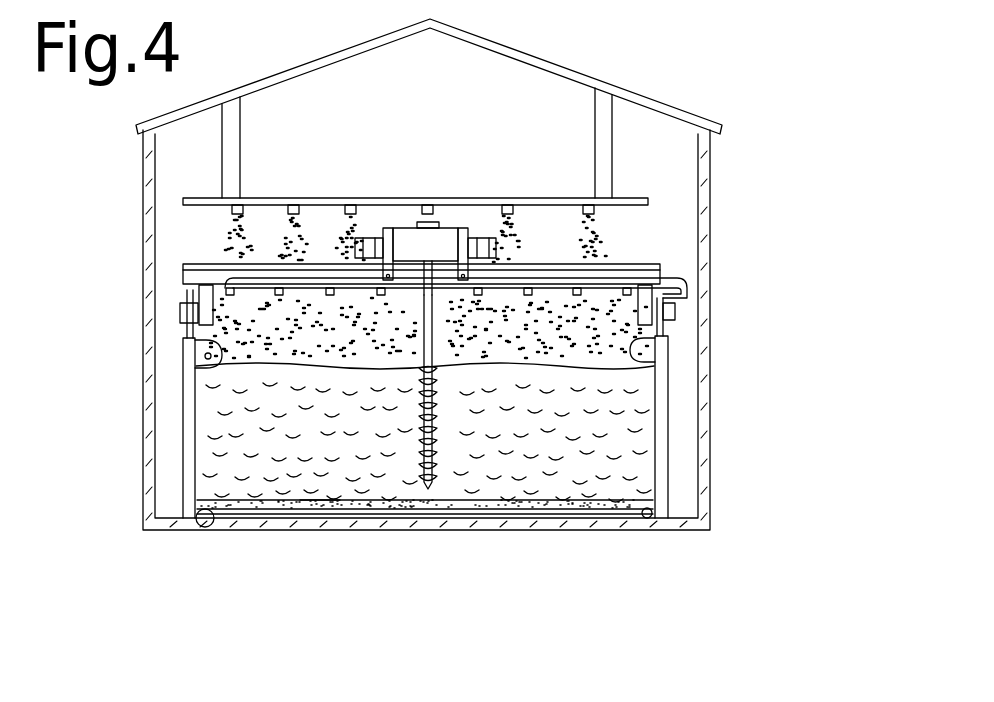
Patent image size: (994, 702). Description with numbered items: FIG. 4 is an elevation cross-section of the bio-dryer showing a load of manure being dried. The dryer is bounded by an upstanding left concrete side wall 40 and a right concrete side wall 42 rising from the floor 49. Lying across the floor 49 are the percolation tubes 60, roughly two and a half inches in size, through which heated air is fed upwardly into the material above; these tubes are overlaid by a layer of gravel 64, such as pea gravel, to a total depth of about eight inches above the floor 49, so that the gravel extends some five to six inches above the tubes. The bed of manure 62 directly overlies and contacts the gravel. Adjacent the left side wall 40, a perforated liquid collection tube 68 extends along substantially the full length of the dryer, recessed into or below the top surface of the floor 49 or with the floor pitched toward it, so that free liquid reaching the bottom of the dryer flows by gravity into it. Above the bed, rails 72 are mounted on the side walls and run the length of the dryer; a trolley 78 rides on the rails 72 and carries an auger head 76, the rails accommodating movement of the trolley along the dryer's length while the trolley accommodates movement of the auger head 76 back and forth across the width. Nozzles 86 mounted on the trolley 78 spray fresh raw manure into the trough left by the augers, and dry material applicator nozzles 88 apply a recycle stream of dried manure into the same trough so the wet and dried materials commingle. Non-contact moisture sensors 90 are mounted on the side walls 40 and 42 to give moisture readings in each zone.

The left concrete side wall 40 is at (185, 460).
The right concrete side wall 42 is at (668, 425).
The floor 49 is at (326, 514).
The percolation tubes 60 is at (585, 513).
The bed of manure 62 is at (347, 473).
The layer of gravel 64 is at (483, 507).
The liquid collection tube 68 is at (210, 528).
The rails 72 is at (690, 330).
The auger head 76 is at (410, 226).
The trolley 78 is at (557, 215).
The nozzles 86 is at (193, 296).
The dry material applicator nozzles 88 is at (233, 209).
The non-contact moisture sensors 90 is at (227, 366).